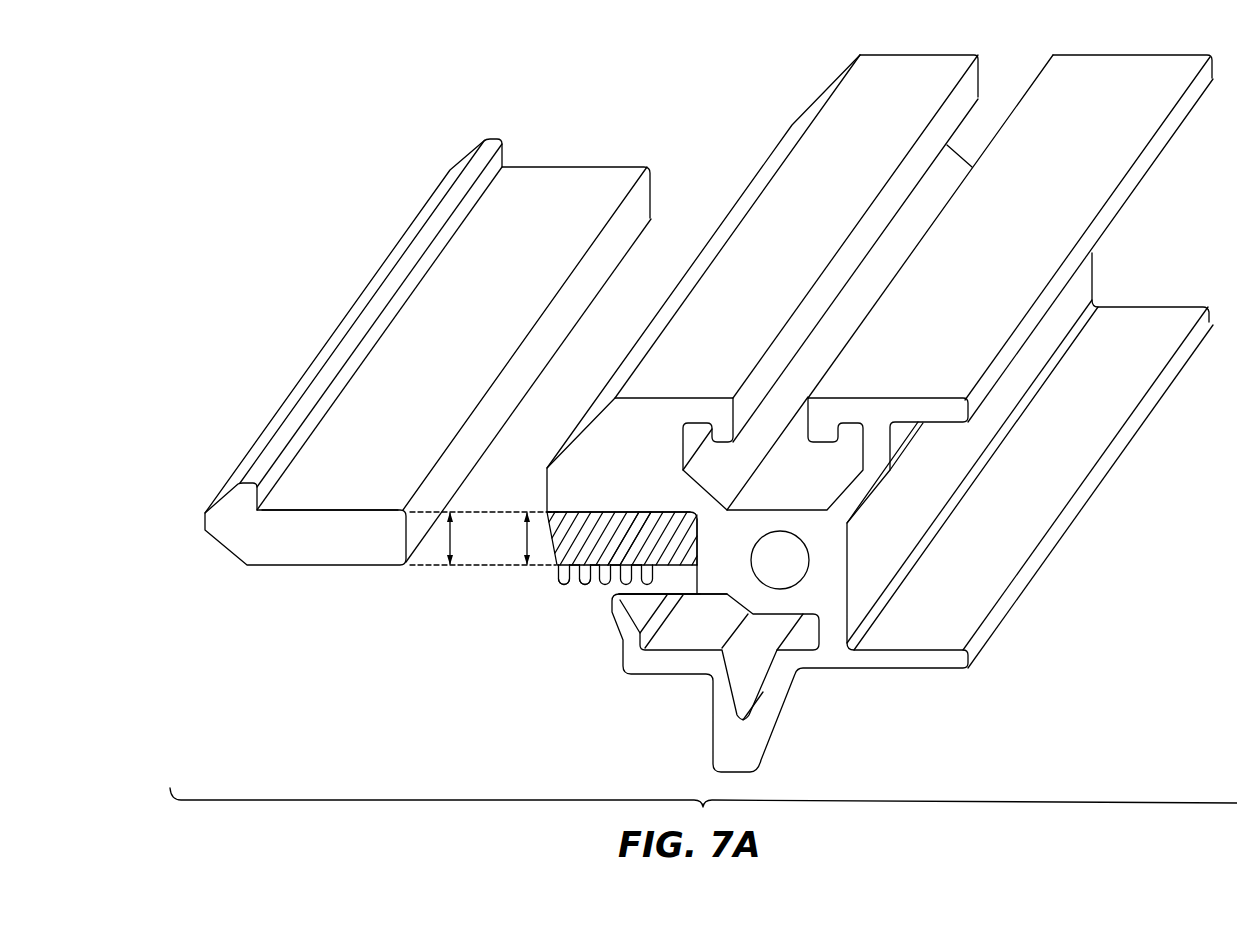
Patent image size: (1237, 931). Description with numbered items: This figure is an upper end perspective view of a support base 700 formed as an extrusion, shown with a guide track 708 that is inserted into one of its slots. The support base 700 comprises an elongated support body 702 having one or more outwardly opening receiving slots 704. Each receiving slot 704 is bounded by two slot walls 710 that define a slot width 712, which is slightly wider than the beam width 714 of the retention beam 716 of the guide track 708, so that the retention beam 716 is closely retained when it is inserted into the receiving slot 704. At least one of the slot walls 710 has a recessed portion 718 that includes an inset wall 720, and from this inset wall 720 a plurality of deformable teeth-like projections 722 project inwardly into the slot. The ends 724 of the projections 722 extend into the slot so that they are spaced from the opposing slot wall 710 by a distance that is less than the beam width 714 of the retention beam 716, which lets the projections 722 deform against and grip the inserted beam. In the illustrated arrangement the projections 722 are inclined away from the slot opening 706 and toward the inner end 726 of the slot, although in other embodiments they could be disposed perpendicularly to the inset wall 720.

The support base 700 is at (689, 104).
The elongated support body 702 is at (712, 397).
The receiving slot 704 is at (686, 545).
The slot opening 706 is at (556, 536).
The guide track 708 is at (218, 492).
The slot walls 710 is at (655, 547).
The slot width 712 is at (527, 538).
The beam width 714 is at (462, 528).
The retention beam 716 is at (372, 508).
The recessed portion 718 is at (642, 545).
The inset wall 720 is at (597, 590).
The teeth-like projections 722 is at (585, 585).
The ends of the projections 724 is at (634, 577).
The inner end of the slot 726 is at (684, 520).